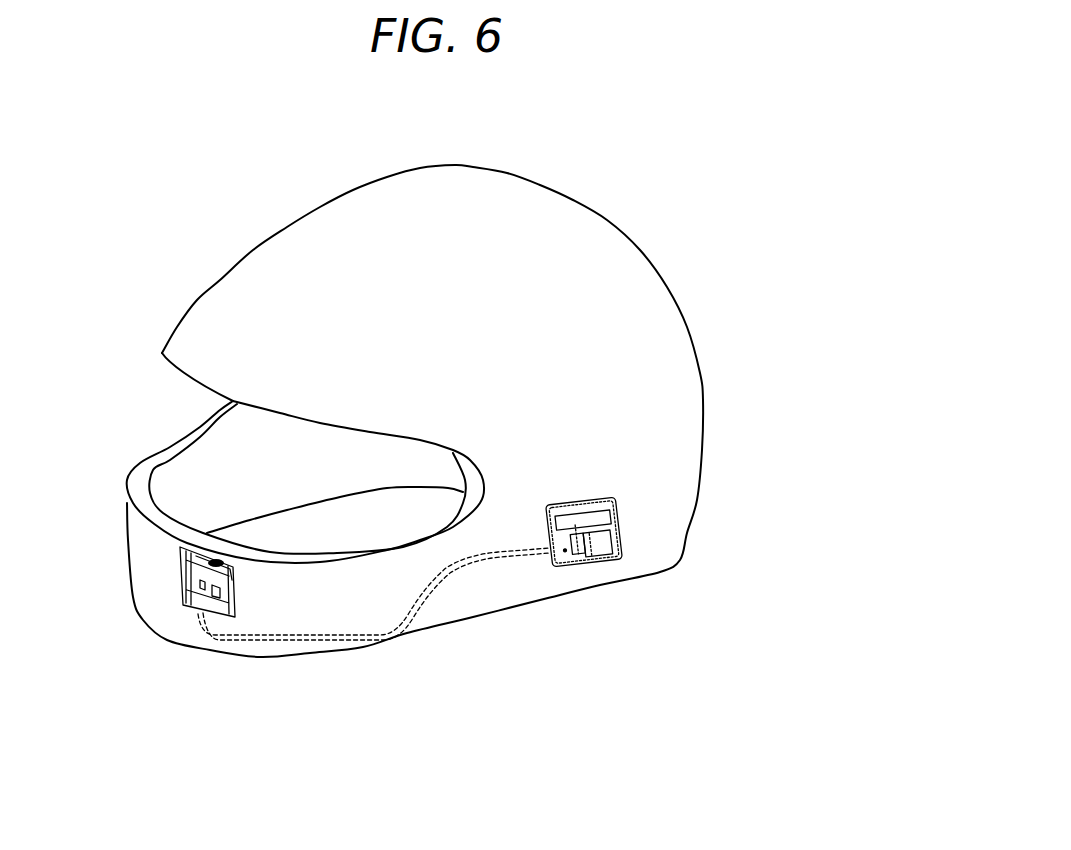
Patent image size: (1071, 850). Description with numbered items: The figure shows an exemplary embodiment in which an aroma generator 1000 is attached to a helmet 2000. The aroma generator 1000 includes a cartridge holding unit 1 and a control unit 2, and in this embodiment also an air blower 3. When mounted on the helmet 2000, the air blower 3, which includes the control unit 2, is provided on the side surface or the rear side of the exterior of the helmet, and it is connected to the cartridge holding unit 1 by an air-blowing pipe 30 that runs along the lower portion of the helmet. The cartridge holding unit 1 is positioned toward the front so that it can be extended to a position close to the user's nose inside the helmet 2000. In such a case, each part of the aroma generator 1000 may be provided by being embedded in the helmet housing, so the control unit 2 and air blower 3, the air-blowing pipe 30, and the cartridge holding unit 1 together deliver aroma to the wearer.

The helmet 2000 is at (637, 182).
The aroma generator 1000 is at (456, 576).
The cartridge holding unit 1 is at (190, 612).
The control unit 2 is at (621, 575).
The air blower 3 is at (584, 532).
The air-blowing pipe 30 is at (348, 643).